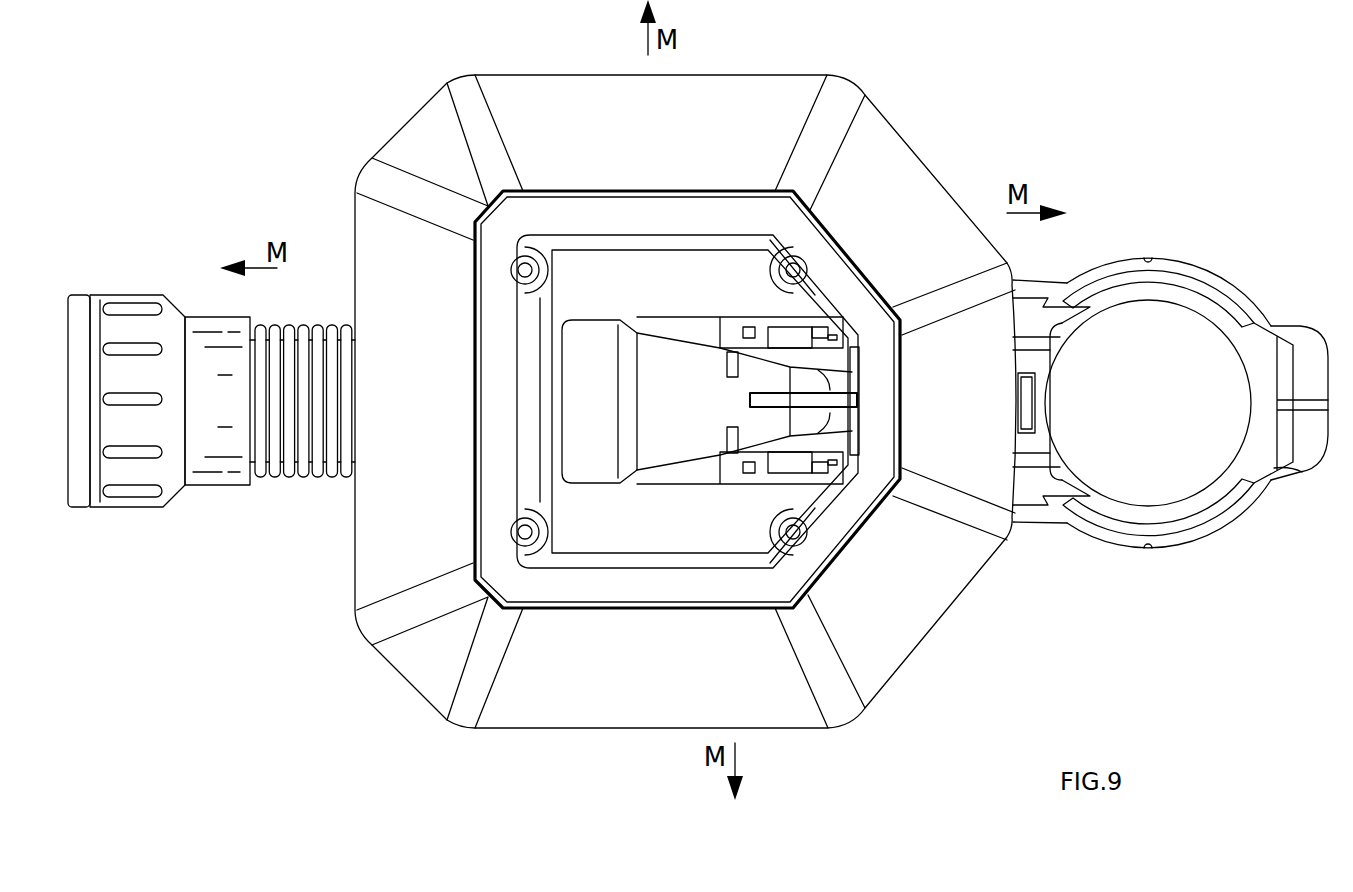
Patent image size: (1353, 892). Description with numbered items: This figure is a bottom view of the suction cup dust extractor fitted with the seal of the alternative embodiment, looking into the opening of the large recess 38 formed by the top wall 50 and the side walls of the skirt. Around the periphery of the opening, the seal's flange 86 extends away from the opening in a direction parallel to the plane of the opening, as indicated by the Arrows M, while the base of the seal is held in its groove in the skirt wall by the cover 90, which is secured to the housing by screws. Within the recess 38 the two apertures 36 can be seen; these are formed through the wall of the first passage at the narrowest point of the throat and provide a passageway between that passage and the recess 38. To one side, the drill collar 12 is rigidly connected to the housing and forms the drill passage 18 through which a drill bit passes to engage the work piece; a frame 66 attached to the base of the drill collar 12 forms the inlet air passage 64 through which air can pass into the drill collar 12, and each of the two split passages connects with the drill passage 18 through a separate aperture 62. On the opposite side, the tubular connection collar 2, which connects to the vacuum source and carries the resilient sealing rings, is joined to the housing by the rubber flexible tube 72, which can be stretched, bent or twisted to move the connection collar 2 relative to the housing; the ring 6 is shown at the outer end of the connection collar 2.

The connection collar 2 is at (100, 305).
The sealing ring 6 is at (78, 303).
The drill collar 12 is at (1180, 258).
The drill passage 18 is at (1187, 375).
The apertures 36 is at (827, 383).
The recess 38 is at (670, 539).
The top wall 50 is at (710, 300).
The aperture 62 is at (1062, 463).
The inlet air passage 64 is at (1297, 355).
The frame 66 is at (1285, 475).
The flexible tube 72 is at (305, 333).
The flange 86 is at (612, 143).
The cover 90 is at (490, 315).